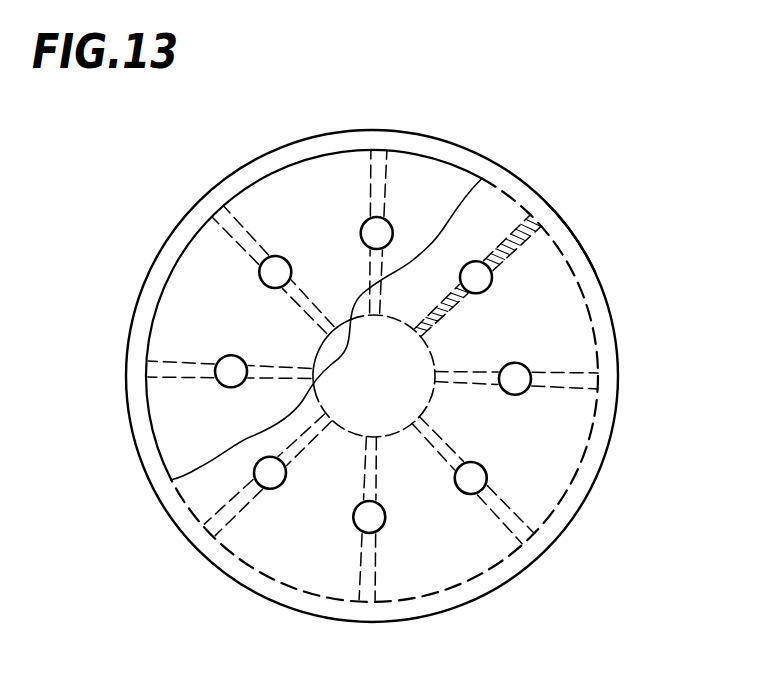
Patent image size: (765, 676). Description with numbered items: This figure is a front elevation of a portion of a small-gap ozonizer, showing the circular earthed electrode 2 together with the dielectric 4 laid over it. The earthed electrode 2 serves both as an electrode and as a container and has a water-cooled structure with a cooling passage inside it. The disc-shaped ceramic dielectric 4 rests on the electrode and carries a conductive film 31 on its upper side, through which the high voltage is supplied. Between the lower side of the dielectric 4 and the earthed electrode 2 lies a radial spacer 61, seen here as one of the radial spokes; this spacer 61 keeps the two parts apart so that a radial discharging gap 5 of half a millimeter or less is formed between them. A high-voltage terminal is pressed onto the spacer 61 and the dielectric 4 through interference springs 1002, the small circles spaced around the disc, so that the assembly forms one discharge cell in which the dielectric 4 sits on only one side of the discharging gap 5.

The earthed electrode 2 is at (593, 316).
The dielectric 4 is at (600, 280).
The radial discharging gap 5 is at (590, 246).
The conductive film 31 is at (190, 242).
The radial spacer 61 is at (527, 217).
The interference spring 1002 is at (228, 358).